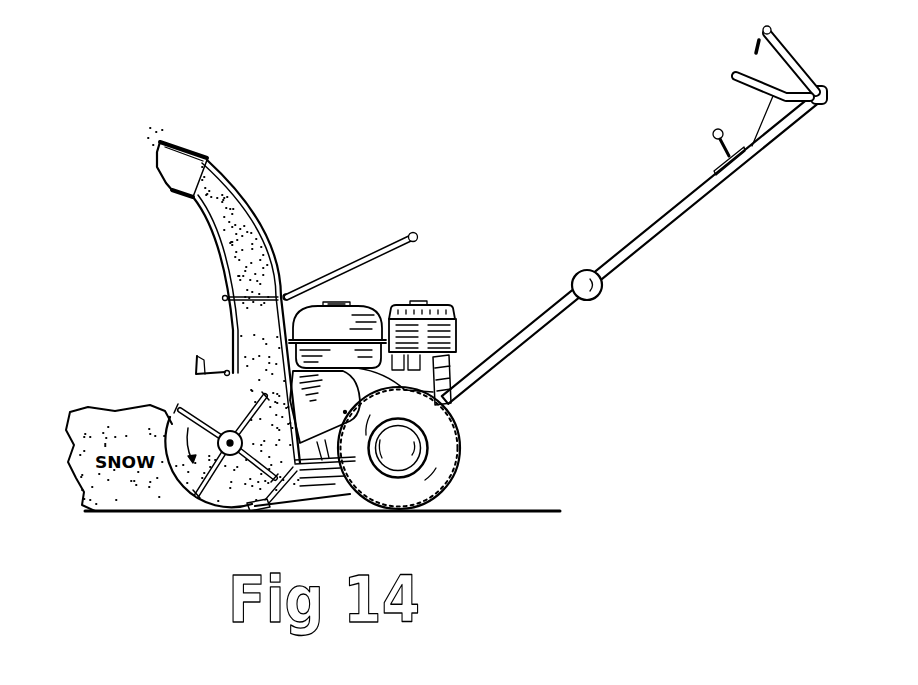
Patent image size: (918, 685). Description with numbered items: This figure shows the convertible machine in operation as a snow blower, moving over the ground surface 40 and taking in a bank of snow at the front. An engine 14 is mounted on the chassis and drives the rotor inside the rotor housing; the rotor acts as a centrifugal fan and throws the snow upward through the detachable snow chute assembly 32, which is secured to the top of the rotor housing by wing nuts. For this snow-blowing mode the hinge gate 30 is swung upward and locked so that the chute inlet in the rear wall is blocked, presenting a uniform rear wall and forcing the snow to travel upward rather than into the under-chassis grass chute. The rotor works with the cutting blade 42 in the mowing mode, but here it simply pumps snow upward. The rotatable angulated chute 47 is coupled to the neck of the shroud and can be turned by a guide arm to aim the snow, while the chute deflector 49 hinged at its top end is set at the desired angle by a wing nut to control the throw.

The engine 14 is at (456, 304).
The hinge gate 30 is at (290, 492).
The snow chute assembly 32 is at (230, 315).
The ground surface 40 is at (487, 513).
The cutting blade 42 is at (260, 508).
The rotatable angulated chute 47 is at (249, 202).
The chute deflector 49 is at (188, 149).